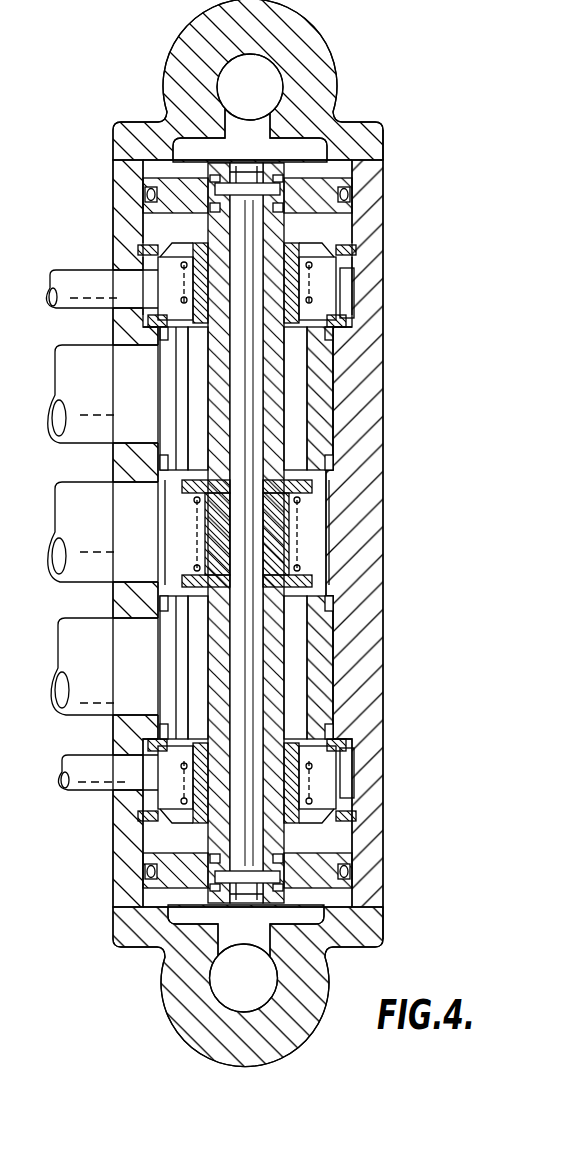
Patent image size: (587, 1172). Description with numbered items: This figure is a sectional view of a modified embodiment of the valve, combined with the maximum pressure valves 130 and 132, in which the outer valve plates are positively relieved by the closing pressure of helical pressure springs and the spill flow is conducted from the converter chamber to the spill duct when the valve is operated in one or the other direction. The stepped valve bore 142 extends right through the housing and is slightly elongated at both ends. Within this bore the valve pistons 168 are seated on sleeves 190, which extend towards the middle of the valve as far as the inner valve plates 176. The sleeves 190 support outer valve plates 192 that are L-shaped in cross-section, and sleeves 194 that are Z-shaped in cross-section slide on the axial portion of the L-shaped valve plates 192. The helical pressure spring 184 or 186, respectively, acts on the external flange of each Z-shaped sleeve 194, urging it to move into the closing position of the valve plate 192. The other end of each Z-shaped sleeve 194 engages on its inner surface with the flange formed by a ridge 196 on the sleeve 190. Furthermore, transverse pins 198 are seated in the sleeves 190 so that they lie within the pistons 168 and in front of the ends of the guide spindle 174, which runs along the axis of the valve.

The maximum pressure valve 130 is at (167, 762).
The maximum pressure valve 132 is at (160, 300).
The valve bore 142 is at (318, 532).
The valve piston 168 is at (322, 188).
The guide spindle 174 is at (300, 567).
The inner valve plate 176 is at (305, 499).
The helical pressure spring 184 is at (300, 785).
The helical pressure spring 186 is at (367, 273).
The sleeve 190 is at (278, 400).
The outer valve plate 192 is at (348, 344).
The Z-shaped sleeve 194 is at (362, 313).
The ridge 196 is at (360, 281).
The transverse pin 198 is at (272, 190).